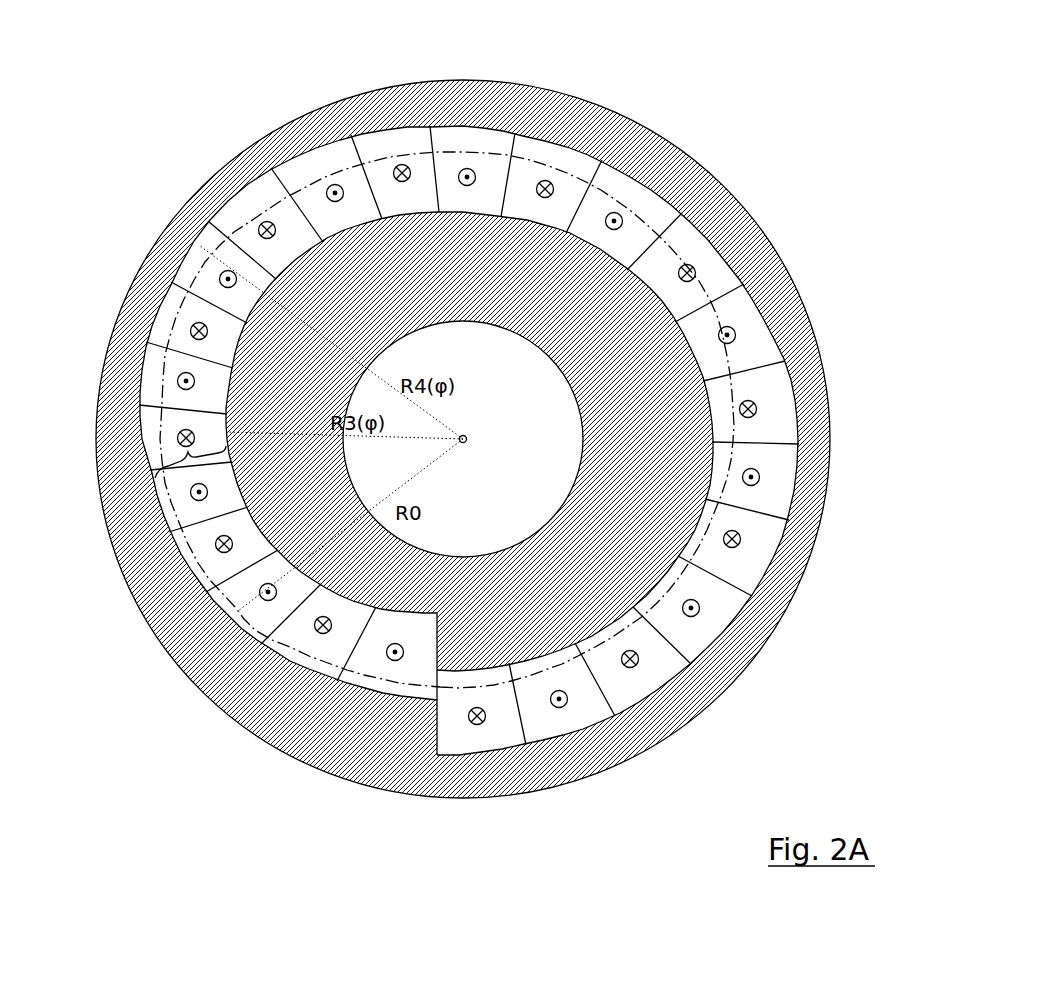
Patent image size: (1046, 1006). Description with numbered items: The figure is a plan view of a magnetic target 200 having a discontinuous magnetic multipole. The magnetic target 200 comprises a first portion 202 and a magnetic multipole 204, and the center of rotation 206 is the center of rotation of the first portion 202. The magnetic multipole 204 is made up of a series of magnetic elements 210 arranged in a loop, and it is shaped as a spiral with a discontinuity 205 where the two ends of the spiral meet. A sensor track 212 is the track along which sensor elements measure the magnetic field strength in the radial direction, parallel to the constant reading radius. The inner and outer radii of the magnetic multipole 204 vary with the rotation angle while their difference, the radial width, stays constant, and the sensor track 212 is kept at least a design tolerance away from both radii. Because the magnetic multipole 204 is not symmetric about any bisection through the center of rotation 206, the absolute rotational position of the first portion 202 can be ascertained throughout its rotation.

The magnetic target 200 is at (160, 198).
The first portion 202 is at (667, 160).
The magnetic multipole 204 is at (477, 126).
The discontinuity 205 is at (437, 700).
The center of rotation 206 is at (464, 435).
The magnetic elements 210 is at (697, 240).
The sensor track 212 is at (590, 647).